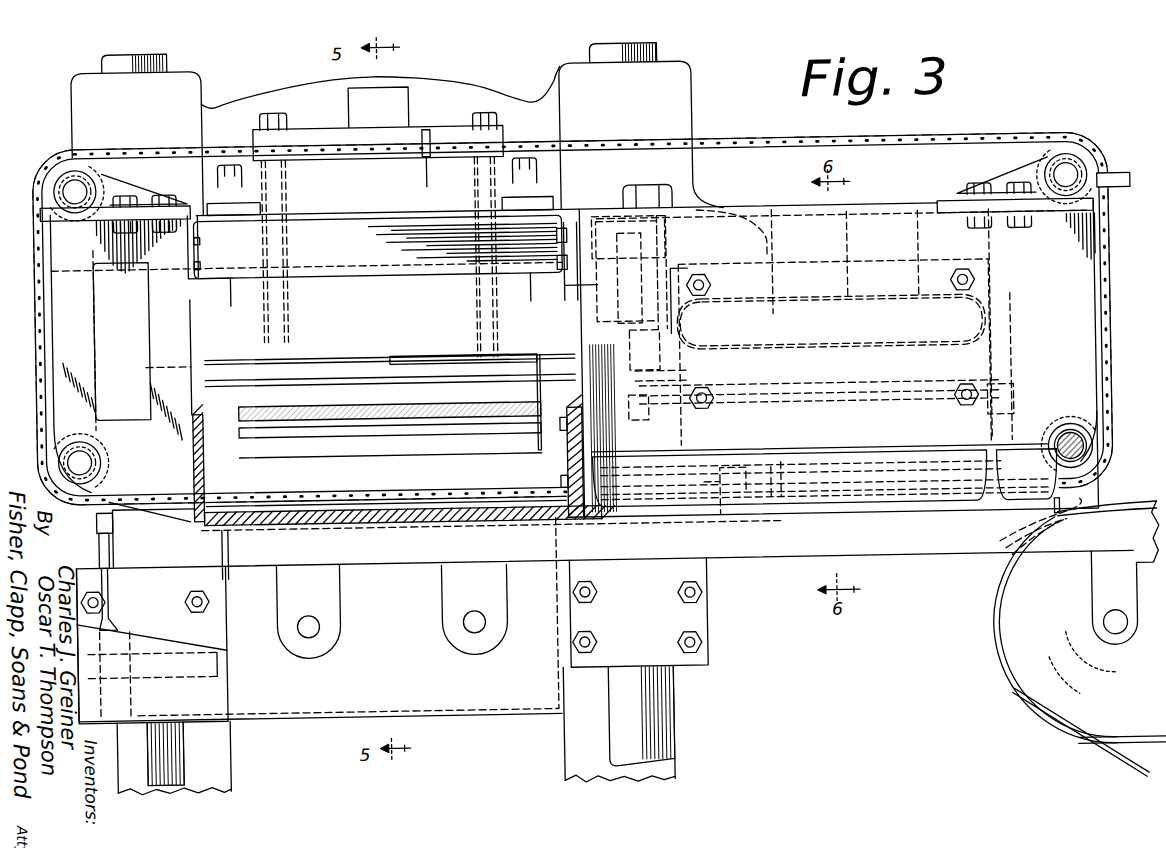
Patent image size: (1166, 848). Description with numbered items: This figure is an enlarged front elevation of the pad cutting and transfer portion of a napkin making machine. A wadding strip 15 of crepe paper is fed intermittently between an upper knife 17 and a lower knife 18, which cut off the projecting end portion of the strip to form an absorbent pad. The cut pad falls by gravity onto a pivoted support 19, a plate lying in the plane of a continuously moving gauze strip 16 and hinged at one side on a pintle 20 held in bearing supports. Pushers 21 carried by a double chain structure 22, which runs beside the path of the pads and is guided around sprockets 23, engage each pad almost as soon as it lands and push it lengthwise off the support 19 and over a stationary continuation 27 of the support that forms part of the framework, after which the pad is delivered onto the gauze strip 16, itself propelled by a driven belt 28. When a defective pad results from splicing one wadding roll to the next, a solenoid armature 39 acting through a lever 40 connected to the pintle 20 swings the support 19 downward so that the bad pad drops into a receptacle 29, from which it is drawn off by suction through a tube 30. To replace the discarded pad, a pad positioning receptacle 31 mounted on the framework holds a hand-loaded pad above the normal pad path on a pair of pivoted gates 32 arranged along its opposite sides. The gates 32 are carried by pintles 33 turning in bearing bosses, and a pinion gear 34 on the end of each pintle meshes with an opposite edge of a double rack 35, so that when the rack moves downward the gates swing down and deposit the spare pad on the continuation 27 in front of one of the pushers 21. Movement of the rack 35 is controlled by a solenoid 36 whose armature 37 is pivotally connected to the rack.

The wadding strip 15 is at (247, 401).
The gauze strip 16 is at (1091, 762).
The upper knife 17 is at (463, 361).
The lower knife 18 is at (528, 426).
The pivoted support 19 is at (315, 506).
The pivot pintle 20 is at (95, 511).
The pusher 21 is at (421, 170).
The double chain structure 22 is at (757, 145).
The sprocket 23 is at (111, 167).
The support continuation 27 is at (774, 498).
The belt 28 is at (989, 645).
The receptacle 29 is at (478, 701).
The tube 30 is at (212, 691).
The pad positioning receptacle 31 is at (882, 300).
The pivoted gate 32 is at (1000, 434).
The pintle 33 is at (1037, 408).
The pinion gear 34 is at (638, 421).
The double rack 35 is at (681, 377).
The solenoid 36 is at (670, 246).
The armature 37 is at (634, 331).
The armature 39 is at (138, 691).
The lever 40 is at (95, 526).